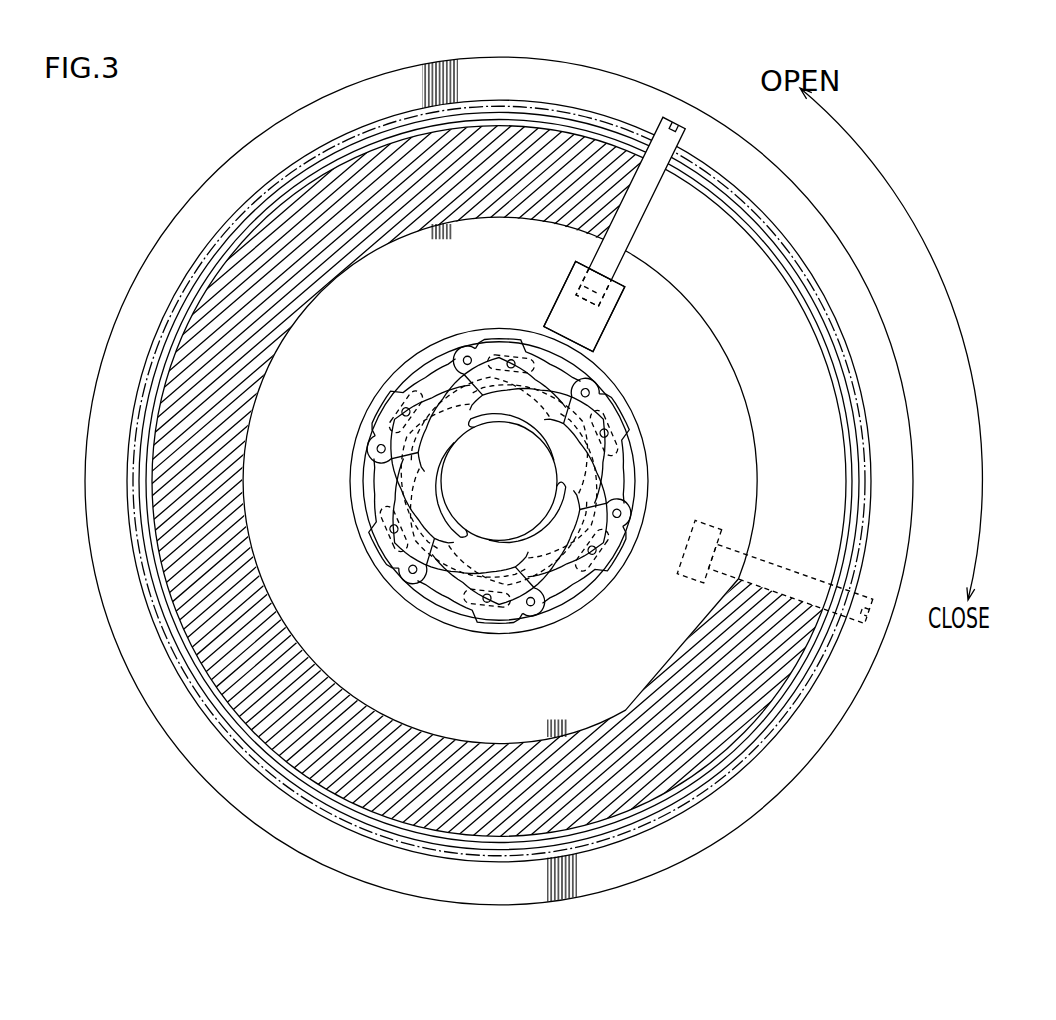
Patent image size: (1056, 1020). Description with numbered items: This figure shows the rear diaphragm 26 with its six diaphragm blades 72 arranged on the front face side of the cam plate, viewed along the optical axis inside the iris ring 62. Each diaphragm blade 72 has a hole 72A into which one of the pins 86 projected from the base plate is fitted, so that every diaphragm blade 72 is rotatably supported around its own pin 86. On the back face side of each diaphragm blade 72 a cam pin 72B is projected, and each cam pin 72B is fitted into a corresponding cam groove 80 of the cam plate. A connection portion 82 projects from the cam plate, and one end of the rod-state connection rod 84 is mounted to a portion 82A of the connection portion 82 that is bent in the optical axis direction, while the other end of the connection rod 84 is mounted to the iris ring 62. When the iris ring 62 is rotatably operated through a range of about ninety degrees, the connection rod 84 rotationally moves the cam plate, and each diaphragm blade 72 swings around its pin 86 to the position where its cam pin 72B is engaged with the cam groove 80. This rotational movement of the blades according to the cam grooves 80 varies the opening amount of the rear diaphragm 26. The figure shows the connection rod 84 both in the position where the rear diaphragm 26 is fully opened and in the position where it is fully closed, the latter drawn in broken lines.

The rear diaphragm 26 is at (346, 565).
The iris ring 62 is at (640, 102).
The diaphragm blade 72 is at (538, 345).
The hole 72A is at (476, 348).
The cam pin 72B is at (520, 354).
The cam groove 80 is at (482, 365).
The connection portion 82 is at (572, 272).
The bent portion of connection portion 82A is at (622, 296).
The connection rod 84 is at (634, 218).
The pin 86 is at (462, 358).